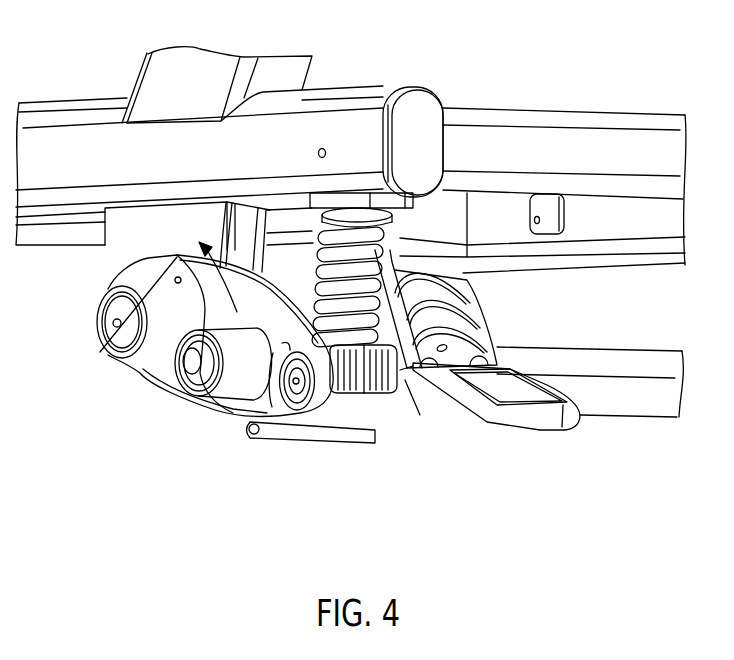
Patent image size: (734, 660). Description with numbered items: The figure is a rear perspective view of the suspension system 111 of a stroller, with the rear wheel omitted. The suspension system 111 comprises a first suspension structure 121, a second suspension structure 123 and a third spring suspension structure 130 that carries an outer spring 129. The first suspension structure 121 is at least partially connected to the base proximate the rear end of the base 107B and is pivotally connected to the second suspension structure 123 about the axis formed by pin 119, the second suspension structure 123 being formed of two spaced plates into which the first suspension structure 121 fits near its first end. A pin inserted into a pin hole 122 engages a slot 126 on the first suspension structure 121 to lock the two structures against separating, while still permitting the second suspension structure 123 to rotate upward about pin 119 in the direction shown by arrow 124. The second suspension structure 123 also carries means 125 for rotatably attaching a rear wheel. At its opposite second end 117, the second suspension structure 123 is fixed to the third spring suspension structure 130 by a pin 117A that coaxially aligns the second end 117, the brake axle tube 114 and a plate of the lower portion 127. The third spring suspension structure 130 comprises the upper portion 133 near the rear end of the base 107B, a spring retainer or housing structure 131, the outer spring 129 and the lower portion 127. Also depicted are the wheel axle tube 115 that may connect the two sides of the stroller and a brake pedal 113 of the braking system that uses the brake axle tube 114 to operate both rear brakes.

The rear end of the base 107B is at (350, 130).
The upper portion 133 is at (323, 200).
The first suspension structure 121 is at (113, 252).
The second suspension structure 123 is at (160, 370).
The arrow 124 is at (150, 370).
The pin 119 is at (112, 322).
The pin hole 122 is at (113, 323).
The slot 126 is at (174, 281).
The means for rotatably attaching a rear wheel 125 is at (192, 367).
The second end of the second suspension structure 117 is at (282, 407).
The pin 117A is at (297, 385).
The lower portion 127 is at (358, 312).
The outer spring 129 is at (364, 268).
The third spring suspension structure 130 is at (412, 487).
The spring retainer or housing structure 131 is at (392, 335).
The brake pedal 113 is at (532, 432).
The brake axle tube 114 is at (630, 410).
The wheel axle tube 115 is at (667, 365).
The suspension system 111 is at (447, 466).